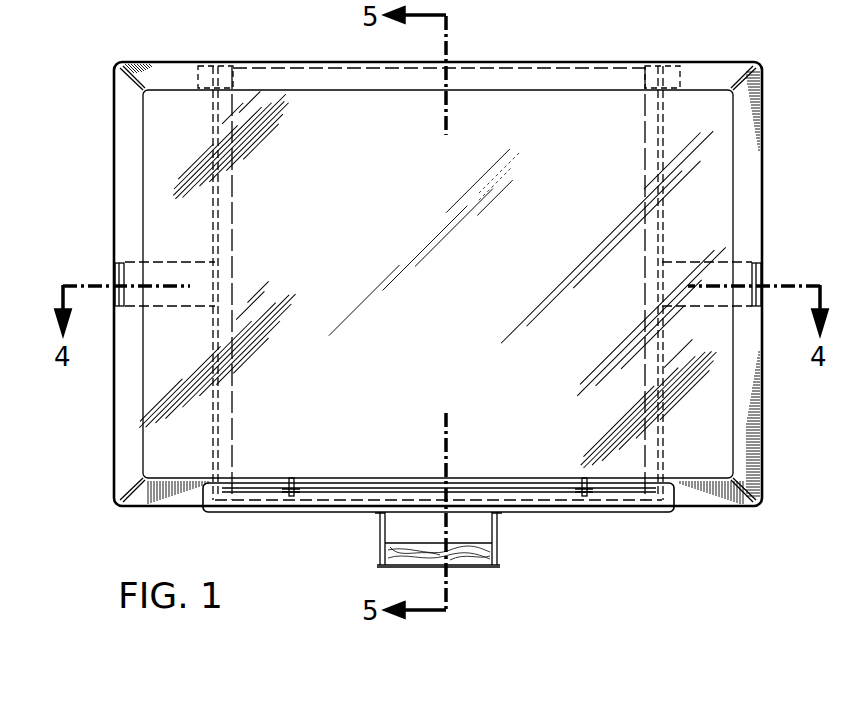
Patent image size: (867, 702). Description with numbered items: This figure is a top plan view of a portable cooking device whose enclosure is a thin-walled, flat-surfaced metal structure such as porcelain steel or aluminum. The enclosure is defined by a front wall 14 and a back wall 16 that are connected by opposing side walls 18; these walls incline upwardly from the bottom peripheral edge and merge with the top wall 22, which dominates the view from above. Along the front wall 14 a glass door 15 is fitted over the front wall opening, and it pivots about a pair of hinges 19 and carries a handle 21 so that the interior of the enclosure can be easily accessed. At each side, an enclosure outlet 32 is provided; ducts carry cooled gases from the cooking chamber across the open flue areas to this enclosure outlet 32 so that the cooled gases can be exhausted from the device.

The front wall 14 is at (187, 490).
The glass door 15 is at (330, 494).
The back wall 16 is at (533, 80).
The side walls 18 is at (132, 151).
The hinges 19 is at (288, 484).
The handle 21 is at (478, 565).
The top wall 22 is at (391, 236).
The enclosure outlet 32 is at (113, 270).